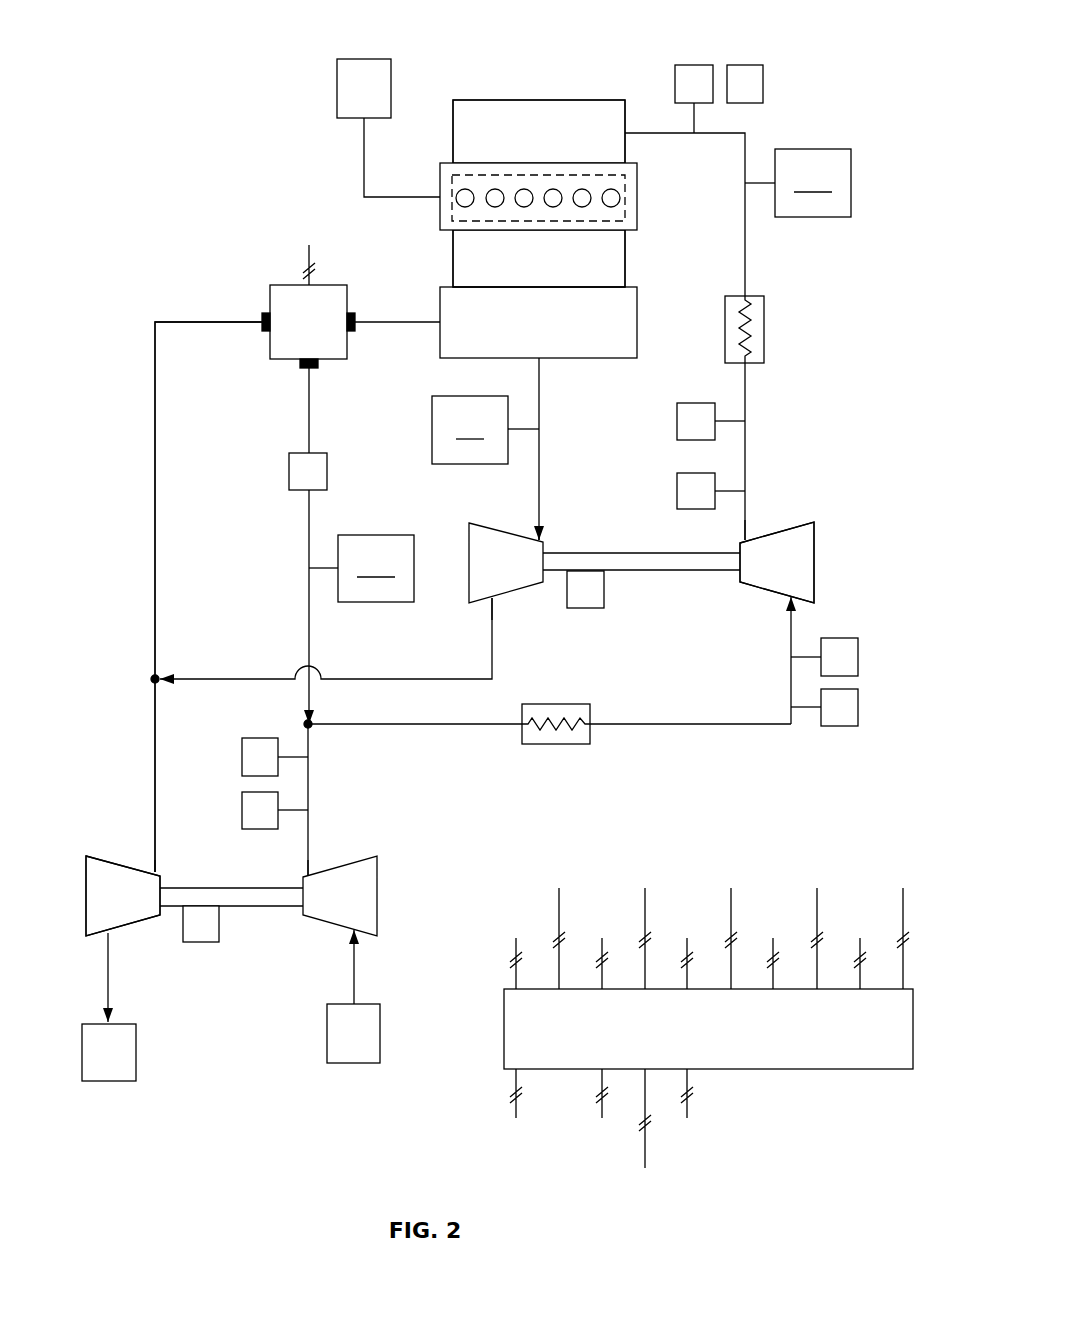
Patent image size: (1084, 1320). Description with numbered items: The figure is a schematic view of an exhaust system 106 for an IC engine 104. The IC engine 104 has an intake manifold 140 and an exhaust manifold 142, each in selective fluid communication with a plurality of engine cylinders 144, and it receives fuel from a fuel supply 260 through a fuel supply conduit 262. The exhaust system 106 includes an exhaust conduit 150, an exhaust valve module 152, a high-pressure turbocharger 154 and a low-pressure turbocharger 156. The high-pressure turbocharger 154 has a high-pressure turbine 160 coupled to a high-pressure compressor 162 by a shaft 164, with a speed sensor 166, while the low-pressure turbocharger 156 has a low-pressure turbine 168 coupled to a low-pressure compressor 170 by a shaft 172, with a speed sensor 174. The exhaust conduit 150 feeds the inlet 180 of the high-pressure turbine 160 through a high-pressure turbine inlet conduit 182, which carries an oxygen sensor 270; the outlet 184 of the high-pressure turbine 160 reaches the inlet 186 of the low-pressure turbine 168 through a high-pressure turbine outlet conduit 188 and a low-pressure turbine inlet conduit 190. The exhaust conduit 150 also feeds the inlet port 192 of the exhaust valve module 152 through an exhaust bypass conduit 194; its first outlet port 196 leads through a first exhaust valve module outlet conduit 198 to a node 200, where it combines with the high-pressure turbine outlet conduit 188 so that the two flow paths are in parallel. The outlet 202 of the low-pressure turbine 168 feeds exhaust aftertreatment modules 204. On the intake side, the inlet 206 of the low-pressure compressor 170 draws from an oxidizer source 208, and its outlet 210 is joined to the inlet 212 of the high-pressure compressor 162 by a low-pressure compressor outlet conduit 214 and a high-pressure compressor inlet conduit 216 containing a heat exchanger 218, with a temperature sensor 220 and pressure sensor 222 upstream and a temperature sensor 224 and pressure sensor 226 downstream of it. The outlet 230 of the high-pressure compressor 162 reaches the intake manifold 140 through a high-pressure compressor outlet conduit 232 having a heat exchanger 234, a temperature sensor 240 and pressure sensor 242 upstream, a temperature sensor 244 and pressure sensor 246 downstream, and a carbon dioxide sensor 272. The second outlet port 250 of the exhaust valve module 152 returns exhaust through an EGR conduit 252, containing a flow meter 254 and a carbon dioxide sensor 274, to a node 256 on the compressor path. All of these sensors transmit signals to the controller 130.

The IC engine 104 is at (508, 75).
The exhaust system 106 is at (175, 220).
The controller 130 is at (325, 241).
The intake manifold 140 is at (552, 145).
The exhaust manifold 142 is at (552, 270).
The engine cylinders 144 is at (592, 175).
The exhaust conduit 150 is at (552, 330).
The exhaust valve module 152 is at (322, 334).
The high-pressure turbocharger 154 is at (843, 528).
The low-pressure turbocharger 156 is at (100, 820).
The high-pressure turbine 160 is at (513, 570).
The high-pressure compressor 162 is at (799, 570).
The shaft 164 is at (651, 572).
The speed sensor 166 is at (583, 610).
The low-pressure turbine 168 is at (130, 904).
The low-pressure compressor 170 is at (361, 904).
The shaft 172 is at (266, 907).
The speed sensor 174 is at (198, 945).
The inlet 180 is at (546, 540).
The high-pressure turbine inlet conduit 182 is at (541, 455).
The outlet 184 is at (495, 598).
The inlet 186 is at (161, 866).
The high-pressure turbine outlet conduit 188 is at (436, 676).
The low-pressure turbine inlet conduit 190 is at (158, 712).
The inlet port 192 is at (352, 312).
The exhaust bypass conduit 194 is at (409, 321).
The first outlet port 196 is at (265, 312).
The first exhaust valve module outlet conduit 198 is at (155, 483).
The node 200 is at (150, 679).
The outlet 202 is at (113, 933).
The exhaust aftertreatment modules 204 is at (122, 1064).
The inlet 206 is at (360, 934).
The oxidizer source 208 is at (367, 1044).
The outlet 210 is at (310, 868).
The inlet 212 is at (787, 598).
The low-pressure compressor outlet conduit 214 is at (310, 792).
The high-pressure compressor inlet conduit 216 is at (445, 727).
The heat exchanger 218 is at (555, 745).
The temperature sensor 220 is at (241, 810).
The pressure sensor 222 is at (241, 757).
The temperature sensor 224 is at (860, 702).
The pressure sensor 226 is at (860, 652).
The outlet 230 is at (746, 540).
The high-pressure compressor outlet conduit 232 is at (745, 253).
The heat exchanger 234 is at (765, 316).
The temperature sensor 240 is at (676, 489).
The pressure sensor 242 is at (676, 420).
The temperature sensor 244 is at (745, 63).
The pressure sensor 246 is at (693, 63).
The second outlet port 250 is at (318, 365).
The EGR conduit 252 is at (308, 521).
The flow meter 254 is at (328, 472).
The node 256 is at (311, 727).
The fuel supply 260 is at (377, 99).
The fuel supply conduit 262 is at (415, 196).
The oxygen sensor 270 is at (431, 409).
The carbon dioxide sensor 272 is at (852, 165).
The carbon dioxide sensor 274 is at (376, 604).